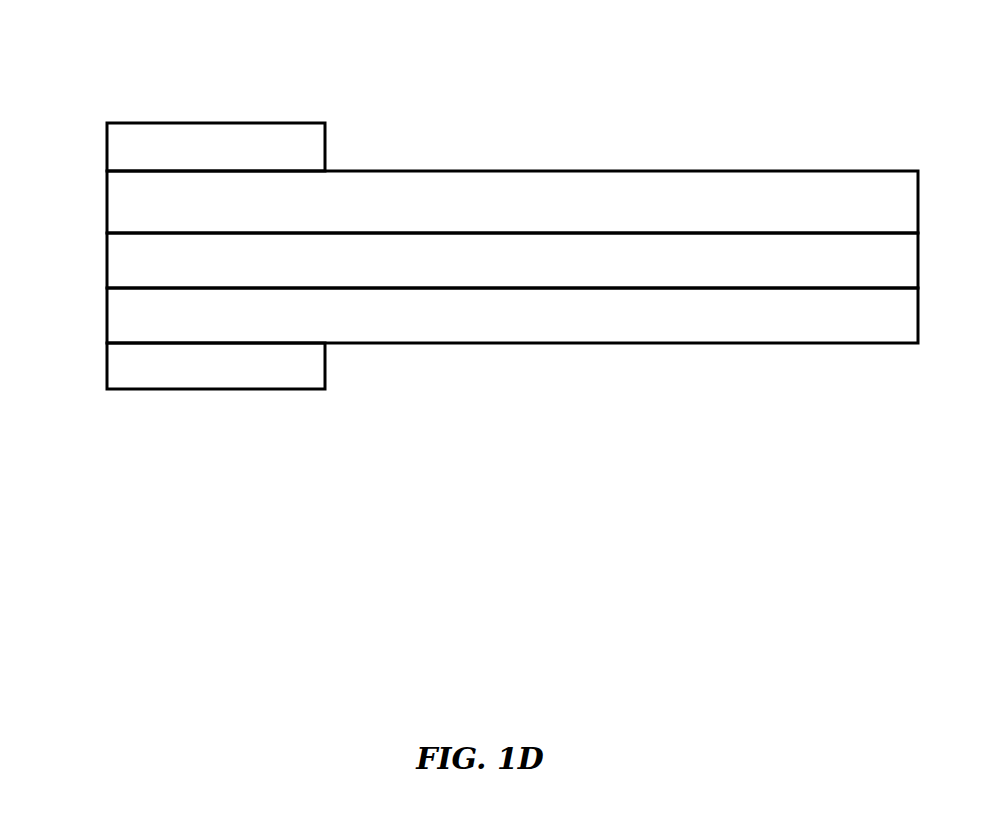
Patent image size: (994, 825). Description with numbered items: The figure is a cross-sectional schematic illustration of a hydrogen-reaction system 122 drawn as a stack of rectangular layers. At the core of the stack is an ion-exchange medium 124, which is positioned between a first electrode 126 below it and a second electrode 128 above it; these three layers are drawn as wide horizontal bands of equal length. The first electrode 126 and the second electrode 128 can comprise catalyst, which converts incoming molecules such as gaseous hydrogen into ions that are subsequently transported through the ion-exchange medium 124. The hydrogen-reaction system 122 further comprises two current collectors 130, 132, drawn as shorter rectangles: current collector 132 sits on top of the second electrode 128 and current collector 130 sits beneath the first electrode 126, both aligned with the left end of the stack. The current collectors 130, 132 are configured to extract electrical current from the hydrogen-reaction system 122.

The hydrogen-reaction system 122 is at (52, 108).
The ion-exchange medium 124 is at (494, 276).
The first electrode 126 is at (494, 327).
The second electrode 128 is at (494, 212).
The current collector 130 is at (197, 377).
The current collector 132 is at (197, 159).